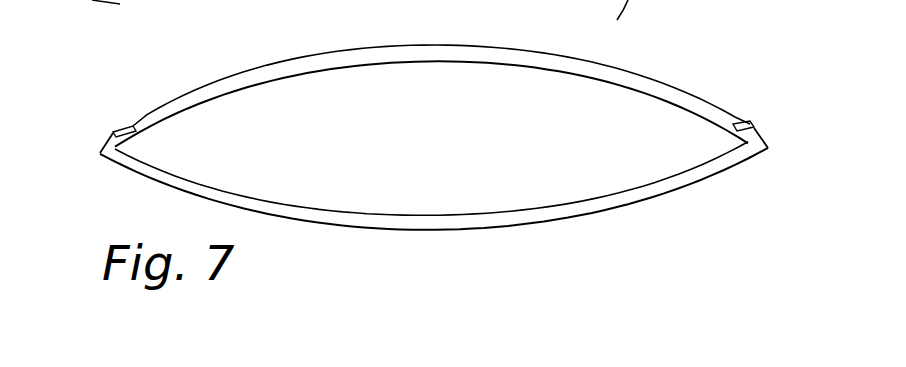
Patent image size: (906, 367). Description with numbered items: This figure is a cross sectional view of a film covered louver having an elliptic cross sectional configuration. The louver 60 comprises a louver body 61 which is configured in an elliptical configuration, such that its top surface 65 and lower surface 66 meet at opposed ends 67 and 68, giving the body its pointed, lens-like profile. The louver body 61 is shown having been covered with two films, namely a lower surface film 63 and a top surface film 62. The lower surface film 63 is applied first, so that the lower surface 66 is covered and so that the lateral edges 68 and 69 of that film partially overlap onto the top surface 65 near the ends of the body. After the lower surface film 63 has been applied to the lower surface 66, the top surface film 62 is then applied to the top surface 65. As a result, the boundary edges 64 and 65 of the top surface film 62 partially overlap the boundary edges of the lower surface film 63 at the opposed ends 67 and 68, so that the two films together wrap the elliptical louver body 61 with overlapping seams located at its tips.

The louver 60 is at (102, 196).
The louver body 61 is at (648, 170).
The top surface film 62 is at (505, 47).
The lower surface film 63 is at (597, 215).
The boundary edge 64 is at (756, 126).
The top surface 65 is at (112, 130).
The lower surface 66 is at (420, 214).
The opposed end 67 is at (116, 148).
The opposed end 68 is at (748, 141).
The lateral edge 69 is at (100, 150).